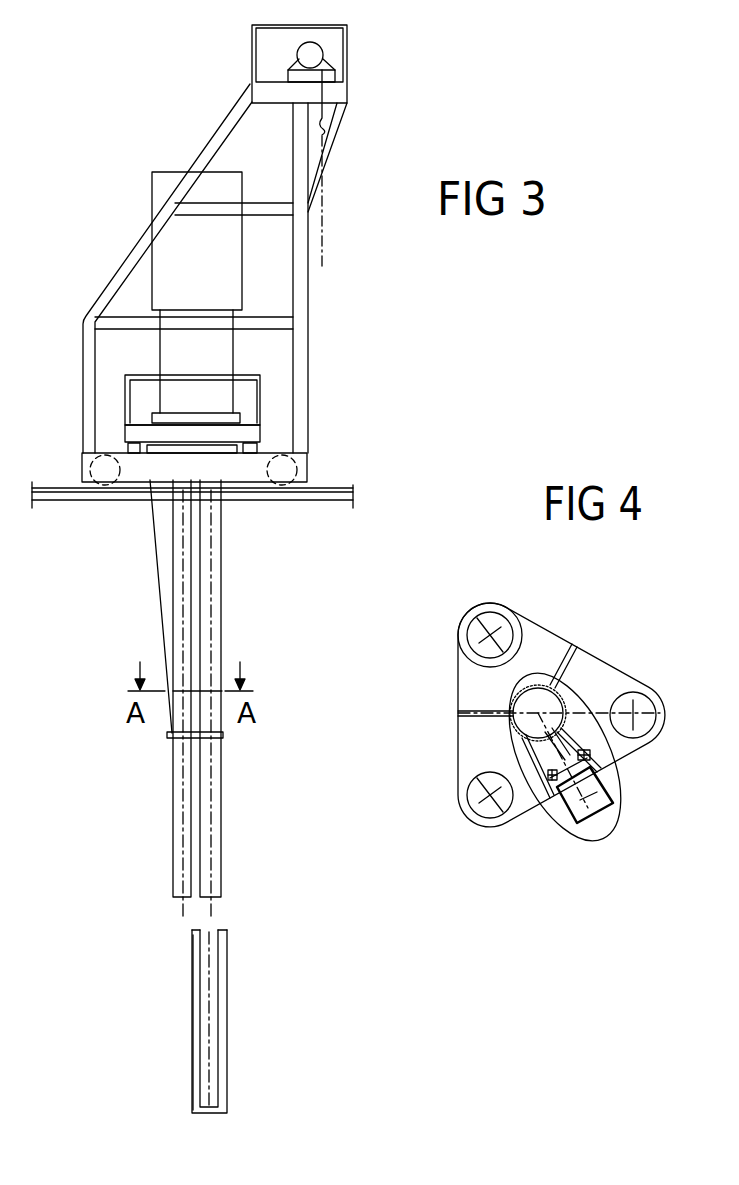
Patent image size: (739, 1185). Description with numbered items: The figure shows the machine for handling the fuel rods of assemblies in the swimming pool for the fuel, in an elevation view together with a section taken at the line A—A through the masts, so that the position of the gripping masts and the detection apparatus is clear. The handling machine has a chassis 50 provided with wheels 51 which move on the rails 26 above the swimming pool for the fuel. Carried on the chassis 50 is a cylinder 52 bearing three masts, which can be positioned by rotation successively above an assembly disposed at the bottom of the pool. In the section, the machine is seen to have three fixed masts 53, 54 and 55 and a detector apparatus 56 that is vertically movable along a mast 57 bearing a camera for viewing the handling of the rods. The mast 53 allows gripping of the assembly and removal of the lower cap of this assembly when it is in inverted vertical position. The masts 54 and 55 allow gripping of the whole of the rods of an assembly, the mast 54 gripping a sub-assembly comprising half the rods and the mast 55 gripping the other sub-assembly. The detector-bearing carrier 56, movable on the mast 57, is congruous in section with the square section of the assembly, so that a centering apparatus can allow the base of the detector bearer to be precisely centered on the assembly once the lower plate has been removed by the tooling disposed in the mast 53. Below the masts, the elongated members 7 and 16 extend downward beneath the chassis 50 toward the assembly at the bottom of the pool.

In FIG. 3, the tube 7 is at (210, 962).
In FIG. 3, the tube wall 16 is at (197, 1002).
In FIG. 3, the rails 26 is at (68, 495).
In FIG. 3, the chassis 50 is at (300, 230).
In FIG. 3, the wheels 51 is at (283, 468).
In FIG. 3, the cylinder 52 is at (167, 193).
In FIG. 4, the mast 53 is at (508, 613).
In FIG. 3, the mast 54 is at (208, 883).
In FIG. 4, the mast 54 is at (648, 693).
In FIG. 3, the mast 55 is at (177, 885).
In FIG. 4, the mast 55 is at (498, 805).
In FIG. 4, the detector-bearing carrier 56 is at (607, 790).
In FIG. 4, the mast 57 is at (577, 823).